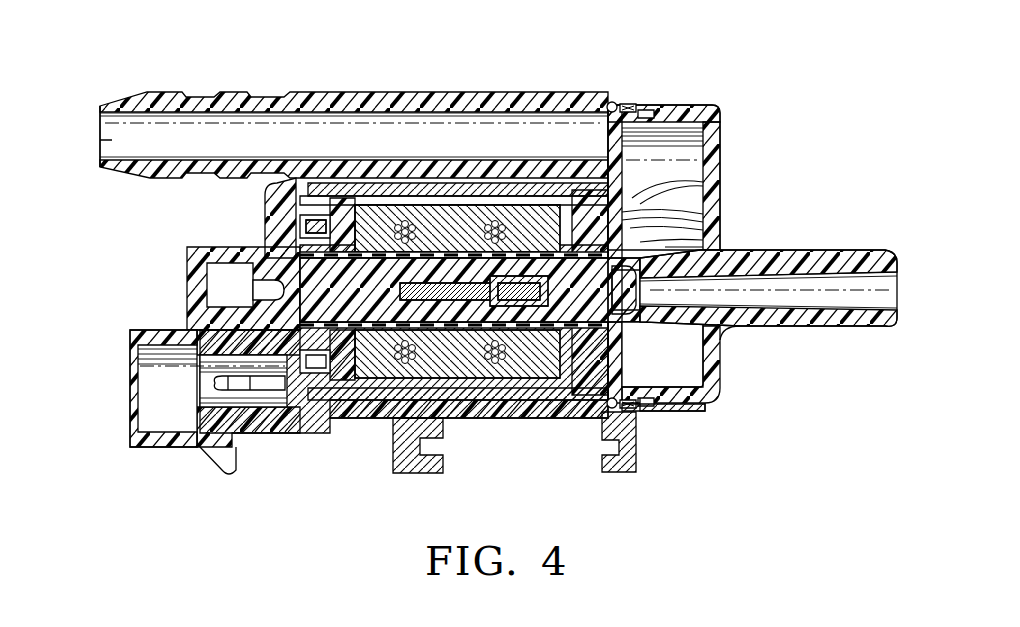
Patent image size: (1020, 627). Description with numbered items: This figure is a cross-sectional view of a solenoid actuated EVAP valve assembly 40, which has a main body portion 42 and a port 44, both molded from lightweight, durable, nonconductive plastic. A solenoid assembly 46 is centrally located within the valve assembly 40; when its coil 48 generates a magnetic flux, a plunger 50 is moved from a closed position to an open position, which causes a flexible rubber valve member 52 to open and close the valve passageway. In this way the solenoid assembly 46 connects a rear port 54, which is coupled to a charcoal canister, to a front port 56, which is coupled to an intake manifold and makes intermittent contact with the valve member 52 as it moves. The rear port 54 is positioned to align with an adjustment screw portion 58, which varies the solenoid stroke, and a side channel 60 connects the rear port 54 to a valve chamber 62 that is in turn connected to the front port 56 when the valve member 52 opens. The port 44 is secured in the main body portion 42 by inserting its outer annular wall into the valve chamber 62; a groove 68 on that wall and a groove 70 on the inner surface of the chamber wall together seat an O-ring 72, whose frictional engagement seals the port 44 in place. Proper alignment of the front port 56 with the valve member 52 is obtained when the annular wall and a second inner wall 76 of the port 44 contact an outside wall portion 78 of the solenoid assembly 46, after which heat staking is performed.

The valve assembly 40 is at (726, 106).
The main body portion 42 is at (400, 85).
The port 44 is at (787, 335).
The solenoid assembly 46 is at (604, 170).
The coil 48 is at (433, 367).
The plunger 50 is at (532, 365).
The valve member 52 is at (628, 398).
The rear port 54 is at (106, 146).
The front port 56 is at (898, 300).
The adjustment screw portion 58 is at (266, 298).
The side channel 60 is at (288, 104).
The valve chamber 62 is at (665, 247).
The groove 68 is at (641, 110).
The groove 70 is at (613, 104).
The O-ring 72 is at (622, 108).
The second inner wall 76 is at (632, 194).
The outside wall portion 78 is at (612, 227).